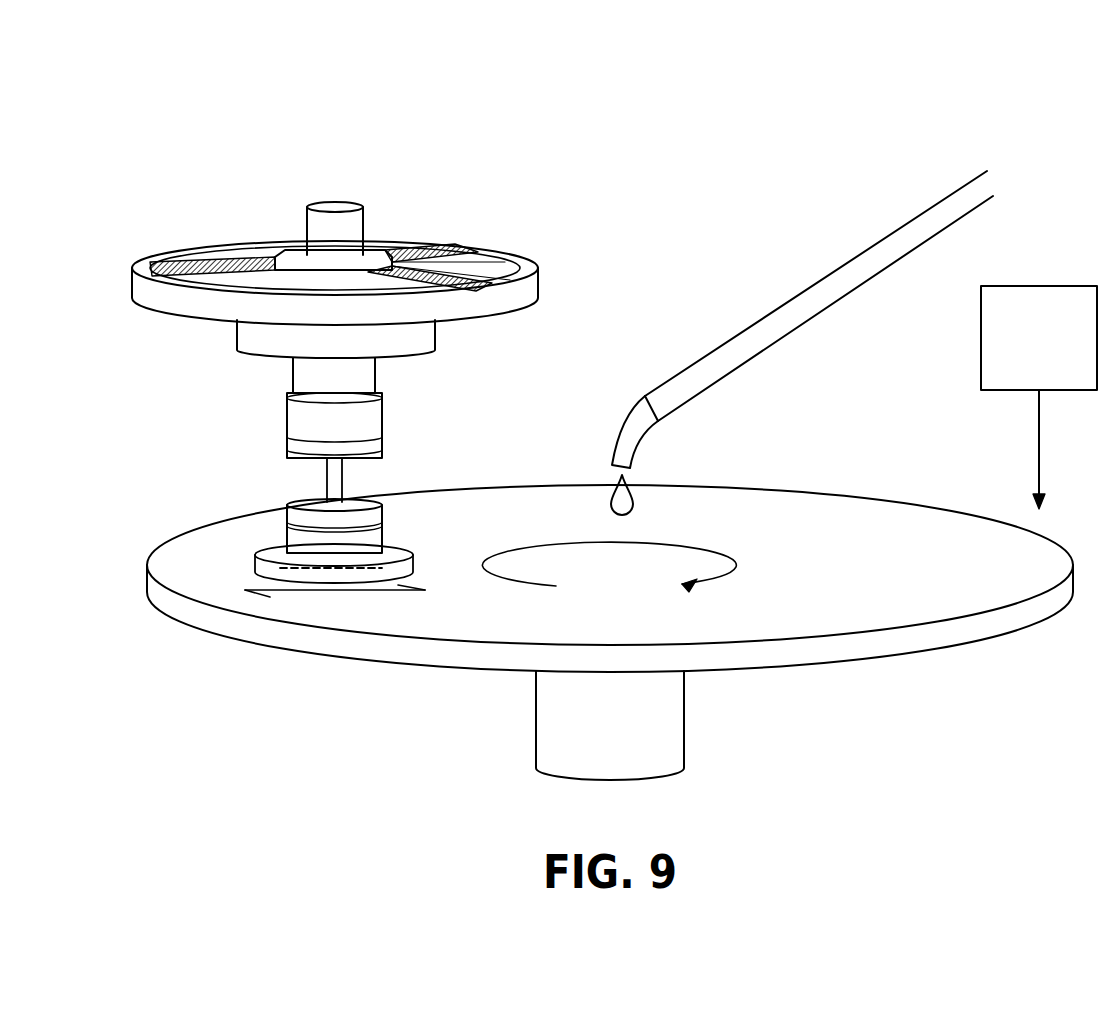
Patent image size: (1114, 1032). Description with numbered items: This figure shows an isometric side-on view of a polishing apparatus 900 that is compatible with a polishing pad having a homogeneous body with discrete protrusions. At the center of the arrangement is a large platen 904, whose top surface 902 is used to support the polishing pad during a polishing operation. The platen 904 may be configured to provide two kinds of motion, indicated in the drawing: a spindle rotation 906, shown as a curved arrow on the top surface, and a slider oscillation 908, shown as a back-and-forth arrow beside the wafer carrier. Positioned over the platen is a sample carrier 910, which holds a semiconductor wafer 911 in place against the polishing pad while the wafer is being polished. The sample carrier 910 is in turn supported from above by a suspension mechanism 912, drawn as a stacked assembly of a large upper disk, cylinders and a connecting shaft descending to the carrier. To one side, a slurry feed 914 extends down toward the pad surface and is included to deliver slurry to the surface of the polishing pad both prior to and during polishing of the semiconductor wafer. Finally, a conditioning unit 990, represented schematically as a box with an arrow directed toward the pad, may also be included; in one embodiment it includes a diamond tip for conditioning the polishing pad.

The polishing apparatus 900 is at (938, 116).
The top surface 902 is at (913, 526).
The platen 904 is at (1009, 620).
The spindle rotation 906 is at (715, 591).
The slider oscillation 908 is at (307, 592).
The sample carrier 910 is at (277, 550).
The semiconductor wafer 911 is at (357, 572).
The suspension mechanism 912 is at (470, 252).
The slurry feed 914 is at (608, 472).
The conditioning unit 990 is at (1039, 397).